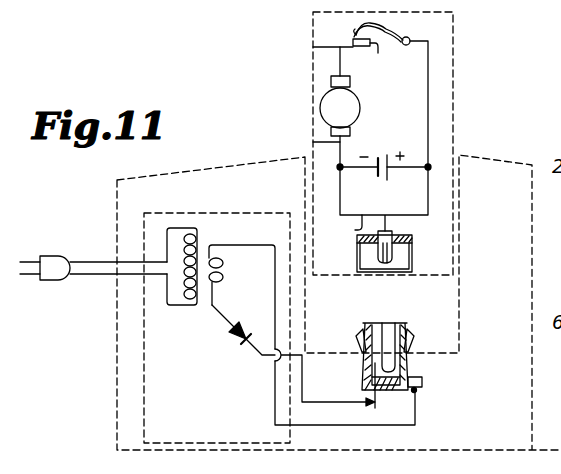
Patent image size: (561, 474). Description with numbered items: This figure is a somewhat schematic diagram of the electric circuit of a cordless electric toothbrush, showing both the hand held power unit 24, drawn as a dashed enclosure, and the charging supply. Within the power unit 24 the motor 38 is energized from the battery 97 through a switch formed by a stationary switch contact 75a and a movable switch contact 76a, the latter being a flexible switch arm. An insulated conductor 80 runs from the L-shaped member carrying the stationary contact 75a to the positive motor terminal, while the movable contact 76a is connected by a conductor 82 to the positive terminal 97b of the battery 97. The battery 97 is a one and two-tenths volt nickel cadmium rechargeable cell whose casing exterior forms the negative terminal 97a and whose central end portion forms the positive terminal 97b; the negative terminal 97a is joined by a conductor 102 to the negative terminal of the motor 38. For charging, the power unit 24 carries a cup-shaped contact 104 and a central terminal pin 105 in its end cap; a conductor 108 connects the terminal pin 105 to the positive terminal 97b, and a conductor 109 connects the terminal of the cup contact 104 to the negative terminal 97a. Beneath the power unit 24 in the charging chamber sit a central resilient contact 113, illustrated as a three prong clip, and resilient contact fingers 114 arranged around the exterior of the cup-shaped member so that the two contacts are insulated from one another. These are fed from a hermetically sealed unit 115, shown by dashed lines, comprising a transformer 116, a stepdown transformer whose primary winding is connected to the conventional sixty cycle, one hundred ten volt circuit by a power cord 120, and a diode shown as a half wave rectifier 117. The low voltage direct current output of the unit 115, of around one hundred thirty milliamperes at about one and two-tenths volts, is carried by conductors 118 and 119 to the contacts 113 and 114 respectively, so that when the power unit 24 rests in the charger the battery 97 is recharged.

The hand held power unit 24 is at (455, 34).
The motor 38 is at (322, 98).
The stationary switch contact 75a is at (378, 53).
The movable switch contact 76a is at (393, 28).
The insulated conductor 80 is at (320, 47).
The insulating conductor 82 is at (428, 90).
The battery 97 is at (378, 177).
The negative terminal 97a is at (342, 165).
The positive terminal 97b is at (426, 169).
The conductor 102 is at (318, 142).
The cup-shaped contact 104 is at (411, 264).
The central terminal 105 is at (388, 263).
The conductor 108 is at (410, 215).
The conductor 109 is at (340, 205).
The central resilient contact 113 is at (390, 322).
The resilient contact fingers 114 is at (359, 345).
The transformer diode assembly unit 115 is at (245, 188).
The transformer 116 is at (209, 245).
The half wave rectifier 117 is at (240, 340).
The conductor 118 is at (345, 400).
The conductor 119 is at (416, 412).
The power cord 120 is at (80, 282).